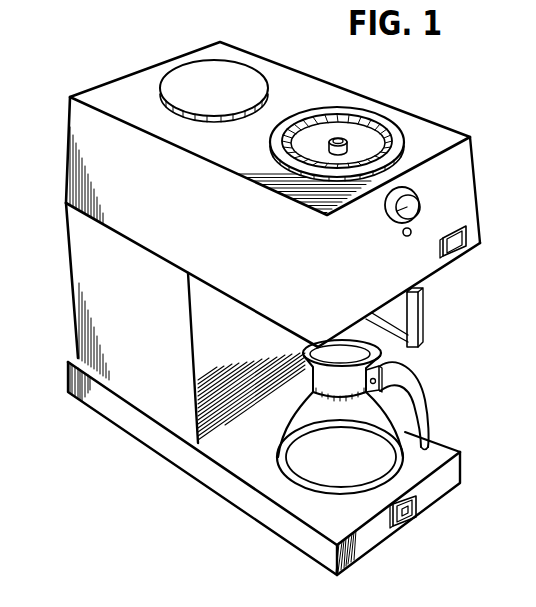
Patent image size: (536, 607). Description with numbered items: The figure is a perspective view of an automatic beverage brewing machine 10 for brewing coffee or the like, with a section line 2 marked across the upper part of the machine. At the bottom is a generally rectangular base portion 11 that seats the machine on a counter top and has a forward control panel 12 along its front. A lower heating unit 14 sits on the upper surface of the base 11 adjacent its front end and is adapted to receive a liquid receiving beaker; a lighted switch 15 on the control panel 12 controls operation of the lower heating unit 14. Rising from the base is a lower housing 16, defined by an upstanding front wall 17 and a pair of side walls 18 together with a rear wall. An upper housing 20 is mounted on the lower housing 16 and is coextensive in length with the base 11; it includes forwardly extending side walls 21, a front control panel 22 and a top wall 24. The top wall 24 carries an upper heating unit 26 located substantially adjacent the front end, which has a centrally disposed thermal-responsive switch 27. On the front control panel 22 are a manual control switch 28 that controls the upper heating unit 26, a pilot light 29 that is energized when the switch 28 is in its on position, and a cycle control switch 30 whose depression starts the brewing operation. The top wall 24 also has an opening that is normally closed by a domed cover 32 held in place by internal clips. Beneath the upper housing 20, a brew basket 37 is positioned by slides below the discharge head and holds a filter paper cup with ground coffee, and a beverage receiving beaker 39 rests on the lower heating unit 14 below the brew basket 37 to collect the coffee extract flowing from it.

The automatic beverage brewing machine 10 is at (98, 63).
The section line 2- 2 is at (145, 53).
The base portion 11 is at (86, 388).
The forward control panel 12 is at (348, 556).
The lower heating unit 14 is at (282, 470).
The lighted switch 15 is at (408, 514).
The lower housing 16 is at (101, 263).
The front wall 17 is at (210, 347).
The side walls 18 is at (144, 309).
The upper housing 20 is at (101, 153).
The side walls 21 is at (236, 231).
The front control panel 22 is at (470, 203).
The top wall 24 is at (275, 78).
The upper heating unit 26 is at (300, 141).
The thermal-responsive switch 27 is at (290, 143).
The manual control switch 28 is at (387, 212).
The pilot light 29 is at (403, 235).
The cycle control switch 30 is at (460, 240).
The domed cover 32 is at (218, 75).
The brew basket 37 is at (377, 348).
The beverage receiving beaker 39 is at (373, 415).